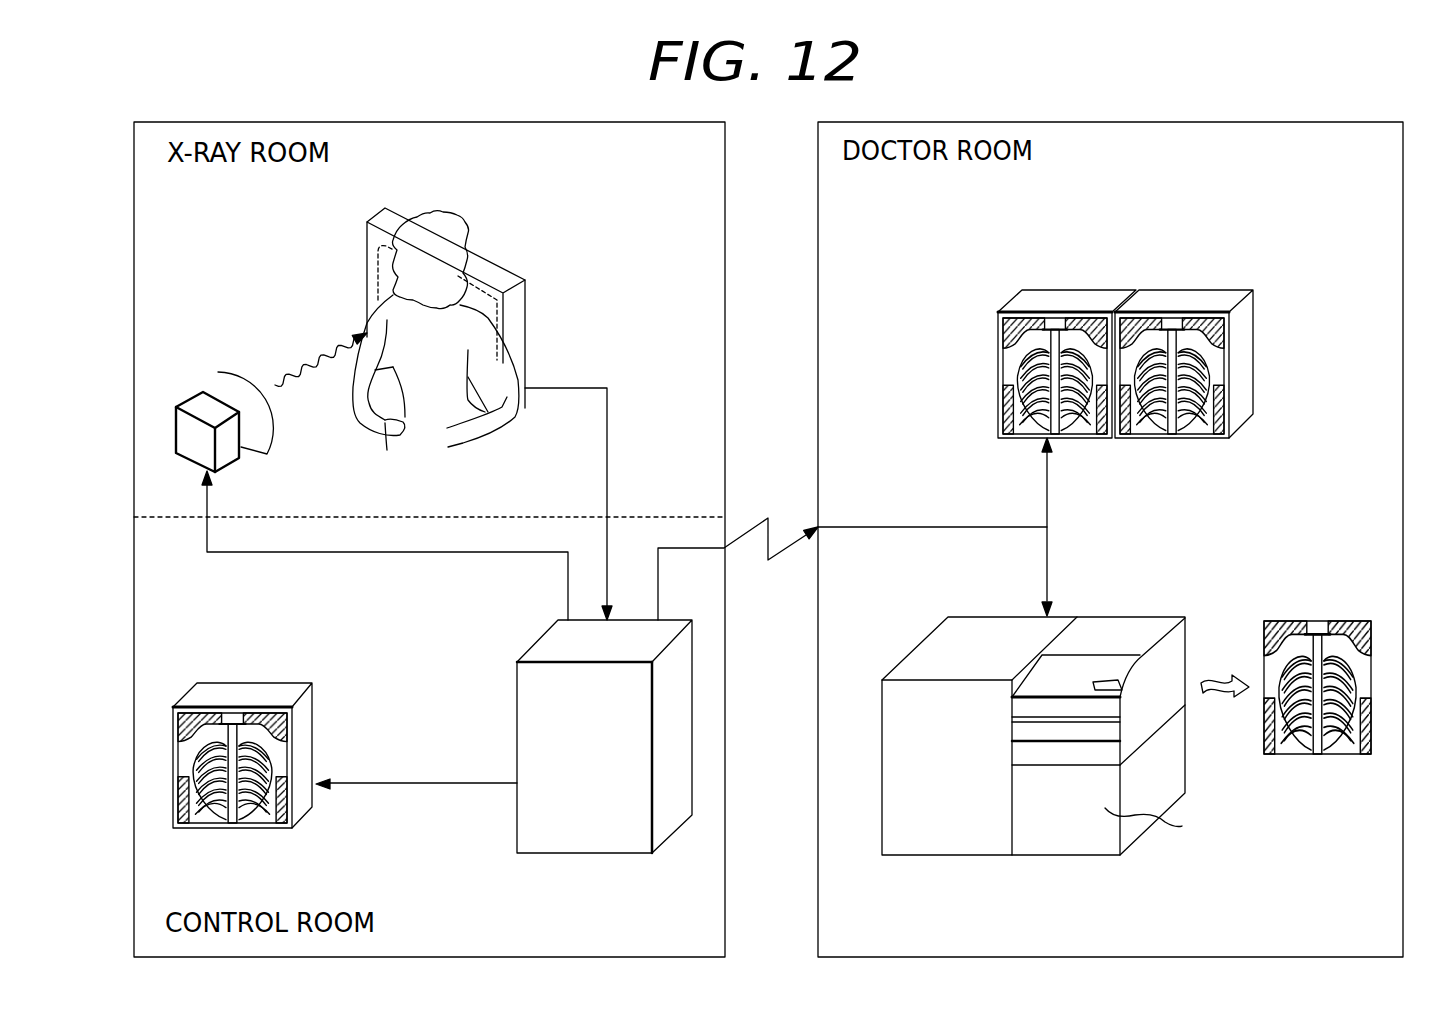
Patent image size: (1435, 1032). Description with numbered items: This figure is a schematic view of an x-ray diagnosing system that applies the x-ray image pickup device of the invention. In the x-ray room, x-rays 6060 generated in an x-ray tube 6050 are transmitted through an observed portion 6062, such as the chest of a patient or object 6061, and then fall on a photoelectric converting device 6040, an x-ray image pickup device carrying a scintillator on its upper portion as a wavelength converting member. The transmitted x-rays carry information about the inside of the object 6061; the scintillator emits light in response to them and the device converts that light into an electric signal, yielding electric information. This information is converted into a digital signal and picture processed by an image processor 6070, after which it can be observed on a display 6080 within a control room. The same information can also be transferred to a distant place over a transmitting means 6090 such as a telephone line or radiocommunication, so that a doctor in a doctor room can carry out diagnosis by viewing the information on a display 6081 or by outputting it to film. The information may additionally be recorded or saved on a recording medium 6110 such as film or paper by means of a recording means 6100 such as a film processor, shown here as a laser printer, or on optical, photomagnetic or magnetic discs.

The photoelectric converting device 6040 is at (510, 315).
The x-ray tube 6050 is at (186, 400).
The x-rays 6060 is at (316, 356).
The object 6061 is at (460, 220).
The observed portion 6062 is at (427, 433).
The image processor 6070 is at (550, 842).
The display 6080 is at (242, 683).
The display 6081 is at (1073, 290).
The transmitting means 6090 is at (768, 518).
The recording means 6100 is at (907, 842).
The recording medium 6110 is at (1325, 621).